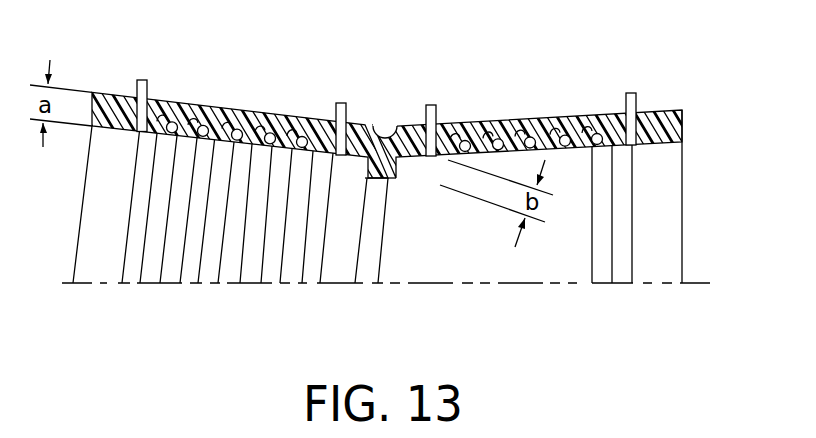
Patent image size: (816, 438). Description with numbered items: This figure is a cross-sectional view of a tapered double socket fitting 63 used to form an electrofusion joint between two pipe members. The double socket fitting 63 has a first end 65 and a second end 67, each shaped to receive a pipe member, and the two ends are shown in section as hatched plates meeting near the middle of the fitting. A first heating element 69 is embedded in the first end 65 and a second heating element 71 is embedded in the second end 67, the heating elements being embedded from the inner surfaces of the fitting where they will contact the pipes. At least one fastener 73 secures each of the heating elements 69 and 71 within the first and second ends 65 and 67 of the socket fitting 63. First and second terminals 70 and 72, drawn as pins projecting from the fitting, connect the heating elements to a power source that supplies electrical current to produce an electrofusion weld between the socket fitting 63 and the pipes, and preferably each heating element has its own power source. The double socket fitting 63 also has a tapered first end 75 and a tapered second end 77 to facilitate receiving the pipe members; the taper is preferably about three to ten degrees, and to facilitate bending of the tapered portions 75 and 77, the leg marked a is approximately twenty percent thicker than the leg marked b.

The double socket fitting 63 is at (280, 100).
The first end 65 is at (88, 101).
The second end 67 is at (695, 119).
The first heating element 69 is at (205, 115).
The first terminal 70 is at (142, 80).
The second heating element 71 is at (503, 118).
The second terminal 72 is at (431, 105).
The fastener 73 is at (229, 113).
The tapered first end 75 is at (108, 126).
The tapered second end 77 is at (661, 145).